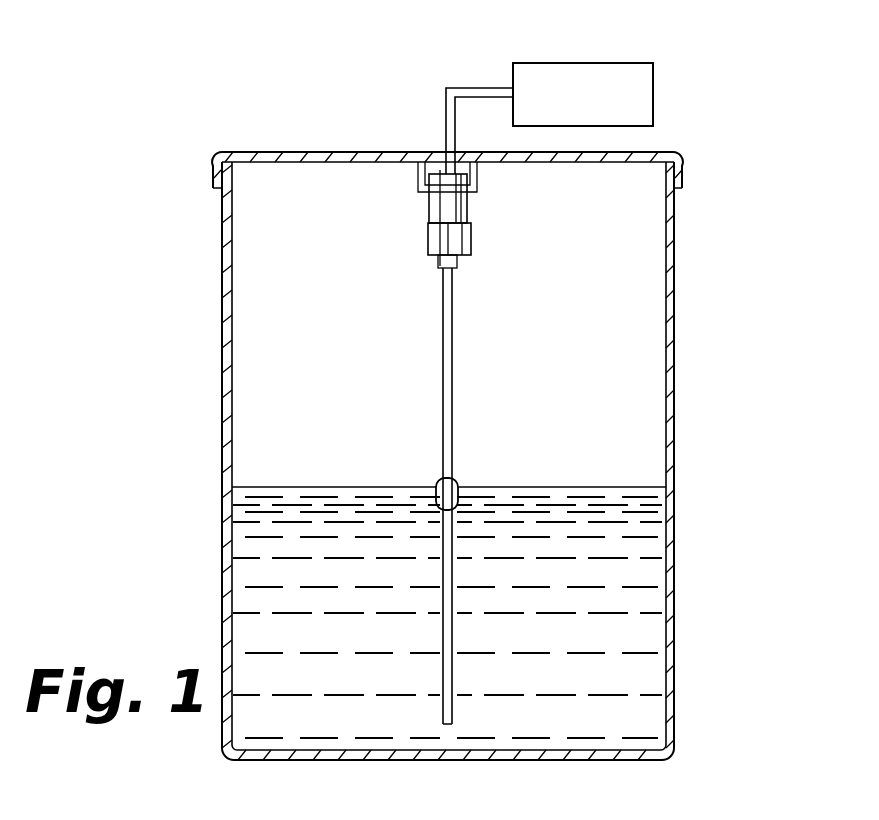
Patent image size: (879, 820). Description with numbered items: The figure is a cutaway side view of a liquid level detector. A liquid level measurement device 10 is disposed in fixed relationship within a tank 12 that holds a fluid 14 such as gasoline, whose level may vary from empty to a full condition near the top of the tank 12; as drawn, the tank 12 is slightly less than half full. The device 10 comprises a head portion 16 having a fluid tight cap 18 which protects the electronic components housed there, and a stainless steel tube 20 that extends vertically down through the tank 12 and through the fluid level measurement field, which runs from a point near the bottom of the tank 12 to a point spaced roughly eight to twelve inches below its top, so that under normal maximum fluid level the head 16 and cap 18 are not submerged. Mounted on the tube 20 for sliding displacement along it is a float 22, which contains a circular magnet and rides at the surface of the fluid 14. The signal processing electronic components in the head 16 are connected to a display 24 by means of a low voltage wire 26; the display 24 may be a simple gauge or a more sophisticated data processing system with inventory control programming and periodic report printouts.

The liquid level measurement device 10 is at (470, 300).
The tank 12 is at (673, 368).
The fluid 14 is at (372, 457).
The head portion 16 is at (427, 242).
The fluid tight cap 18 is at (467, 203).
The stainless steel tube 20 is at (452, 388).
The float 22 is at (457, 478).
The display 24 is at (614, 63).
The low voltage wire 26 is at (467, 88).